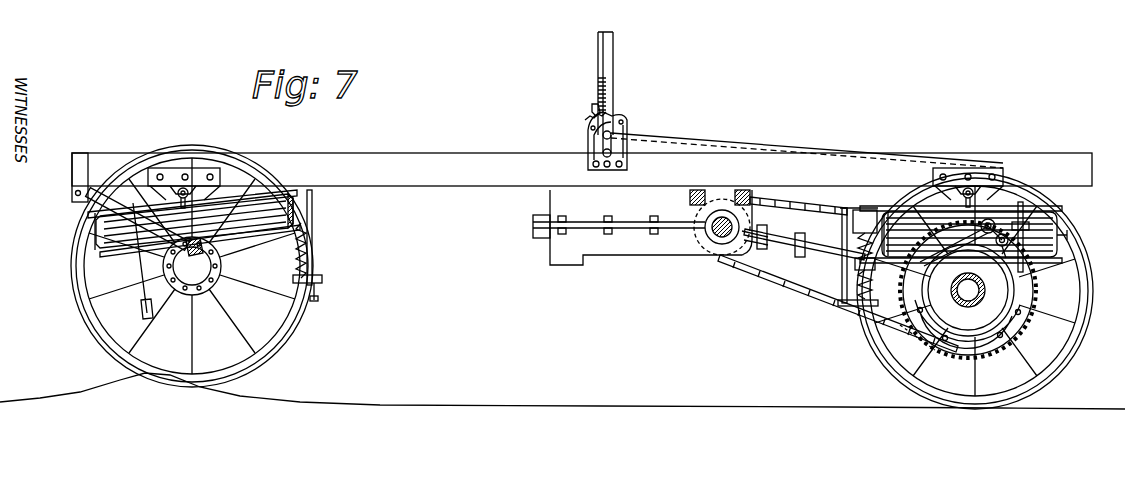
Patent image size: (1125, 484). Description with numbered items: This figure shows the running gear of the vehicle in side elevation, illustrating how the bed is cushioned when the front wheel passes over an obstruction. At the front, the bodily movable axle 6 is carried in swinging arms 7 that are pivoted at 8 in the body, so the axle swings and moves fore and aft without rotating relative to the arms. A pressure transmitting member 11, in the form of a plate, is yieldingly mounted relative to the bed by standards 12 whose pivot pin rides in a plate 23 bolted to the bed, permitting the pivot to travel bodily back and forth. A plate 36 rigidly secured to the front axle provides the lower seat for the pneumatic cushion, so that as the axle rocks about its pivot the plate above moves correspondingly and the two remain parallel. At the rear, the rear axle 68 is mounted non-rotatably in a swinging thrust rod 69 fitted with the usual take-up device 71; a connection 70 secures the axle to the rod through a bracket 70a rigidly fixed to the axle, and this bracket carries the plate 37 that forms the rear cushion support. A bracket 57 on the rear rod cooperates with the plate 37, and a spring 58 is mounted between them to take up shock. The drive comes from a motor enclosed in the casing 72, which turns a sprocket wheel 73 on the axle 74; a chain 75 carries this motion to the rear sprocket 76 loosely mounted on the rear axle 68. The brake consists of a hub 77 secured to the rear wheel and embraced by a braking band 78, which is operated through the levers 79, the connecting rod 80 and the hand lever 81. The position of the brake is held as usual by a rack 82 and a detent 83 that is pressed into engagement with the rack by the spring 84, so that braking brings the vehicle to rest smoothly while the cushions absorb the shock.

The axle 6 is at (197, 240).
The swinging arms 7 is at (107, 208).
The pivot 8 is at (72, 199).
The pressure transmitting member 11 is at (268, 192).
The standards 12 is at (148, 177).
The plate 23 is at (205, 168).
The plate 36 is at (192, 266).
The plate 37 is at (1000, 273).
The bracket 57 is at (857, 312).
The spring 58 is at (305, 258).
The rear axle 68 is at (1073, 235).
The thrust rod 69 is at (828, 258).
The connection 70 is at (960, 288).
The bracket 70a is at (967, 324).
The take-up device 71 is at (777, 248).
The casing 72 is at (630, 246).
The sprocket wheel 73 is at (714, 242).
The axle 74 is at (710, 240).
The chain 75 is at (846, 295).
The rear sprocket 76 is at (905, 330).
The hub 77 is at (1003, 234).
The braking band 78 is at (928, 262).
The levers 79 is at (990, 223).
The connecting rod 80 is at (770, 144).
The hand lever 81 is at (614, 93).
The rack 82 is at (585, 122).
The detent 83 is at (593, 108).
The spring 84 is at (598, 84).